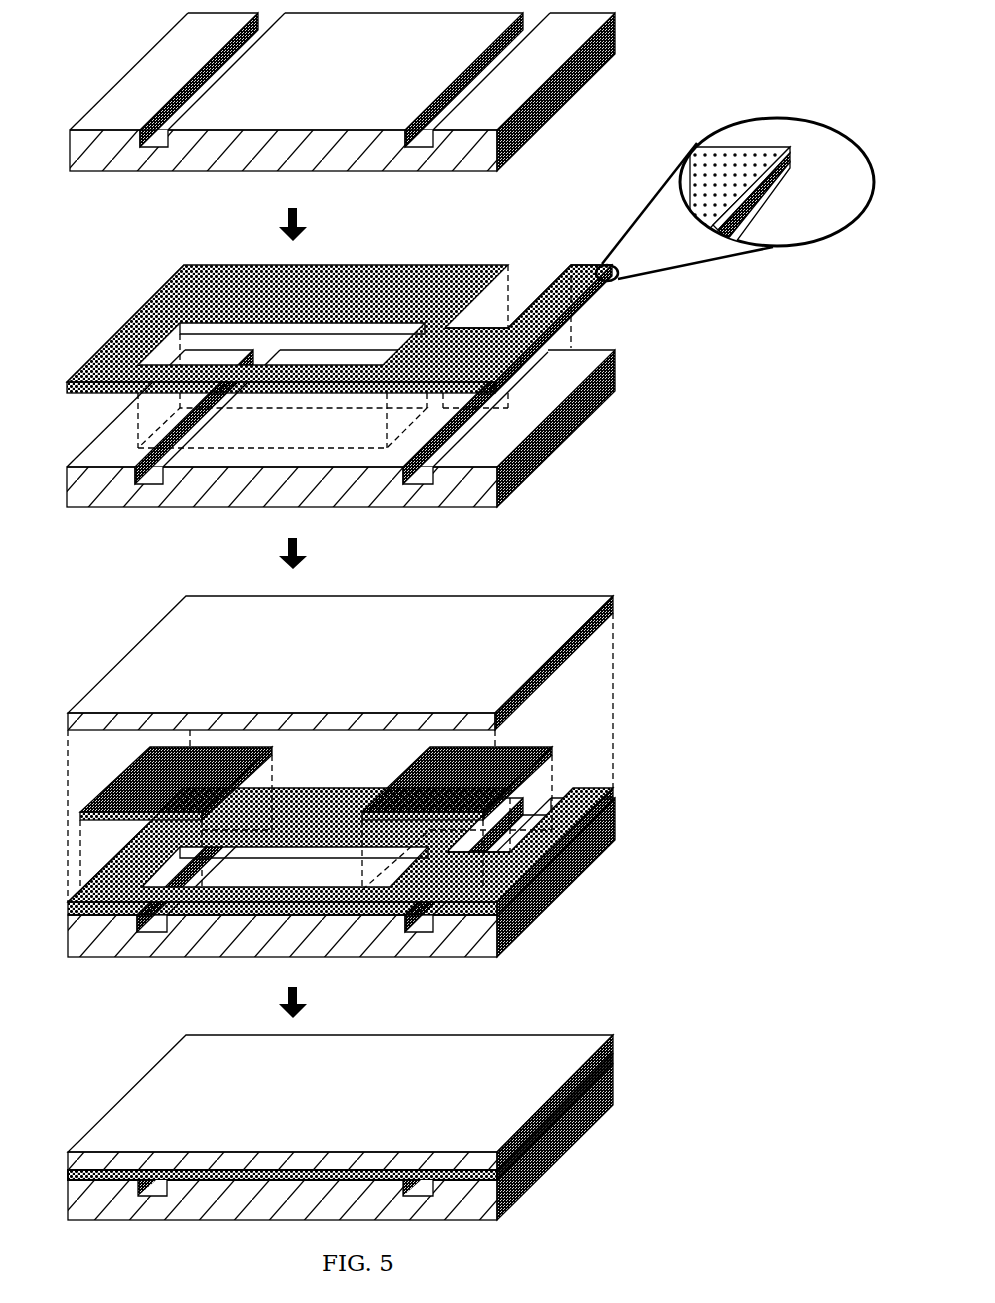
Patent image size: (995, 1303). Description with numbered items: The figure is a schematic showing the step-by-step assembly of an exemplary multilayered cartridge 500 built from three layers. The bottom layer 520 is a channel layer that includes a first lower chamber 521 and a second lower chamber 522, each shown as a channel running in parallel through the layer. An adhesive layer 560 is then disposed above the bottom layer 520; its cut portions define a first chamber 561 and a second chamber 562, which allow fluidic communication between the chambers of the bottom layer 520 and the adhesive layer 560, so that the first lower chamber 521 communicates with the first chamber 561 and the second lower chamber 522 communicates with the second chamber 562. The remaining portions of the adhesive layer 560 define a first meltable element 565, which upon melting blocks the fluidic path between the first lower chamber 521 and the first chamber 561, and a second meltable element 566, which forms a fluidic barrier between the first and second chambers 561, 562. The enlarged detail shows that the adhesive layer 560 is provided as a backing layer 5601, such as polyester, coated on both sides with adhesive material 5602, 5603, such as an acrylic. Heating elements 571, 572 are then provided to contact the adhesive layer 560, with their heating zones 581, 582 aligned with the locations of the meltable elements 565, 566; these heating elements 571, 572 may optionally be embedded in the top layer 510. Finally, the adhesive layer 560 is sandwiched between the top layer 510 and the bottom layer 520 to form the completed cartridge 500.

The multilayered cartridge 500 is at (606, 1022).
The top layer 510 is at (490, 705).
The bottom layer 520 is at (492, 166).
The first lower chamber 521 is at (147, 150).
The second lower chamber 522 is at (414, 150).
The adhesive layer 560 is at (224, 286).
The first chamber 561 is at (138, 364).
The second chamber 562 is at (531, 269).
The first meltable element 565 is at (133, 338).
The second meltable element 566 is at (464, 356).
The heating element 571 is at (190, 789).
The heating element 572 is at (469, 789).
The heating zone 581 is at (126, 845).
The heating zone 582 is at (473, 866).
The backing layer 5601 is at (792, 161).
The adhesive material 5602 is at (740, 188).
The adhesive material 5603 is at (758, 216).